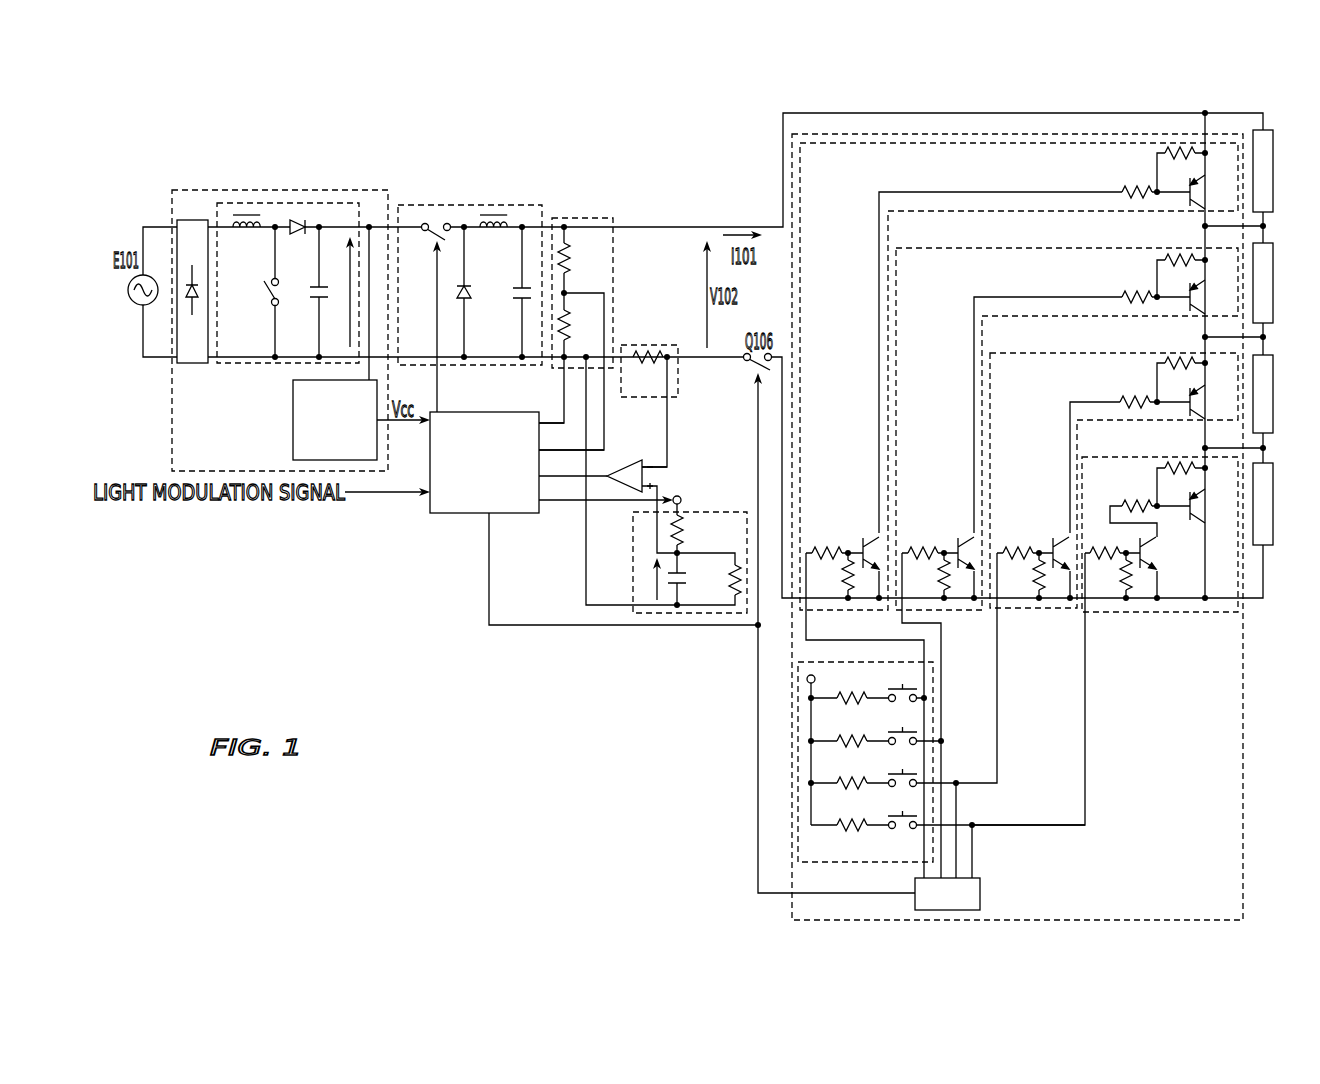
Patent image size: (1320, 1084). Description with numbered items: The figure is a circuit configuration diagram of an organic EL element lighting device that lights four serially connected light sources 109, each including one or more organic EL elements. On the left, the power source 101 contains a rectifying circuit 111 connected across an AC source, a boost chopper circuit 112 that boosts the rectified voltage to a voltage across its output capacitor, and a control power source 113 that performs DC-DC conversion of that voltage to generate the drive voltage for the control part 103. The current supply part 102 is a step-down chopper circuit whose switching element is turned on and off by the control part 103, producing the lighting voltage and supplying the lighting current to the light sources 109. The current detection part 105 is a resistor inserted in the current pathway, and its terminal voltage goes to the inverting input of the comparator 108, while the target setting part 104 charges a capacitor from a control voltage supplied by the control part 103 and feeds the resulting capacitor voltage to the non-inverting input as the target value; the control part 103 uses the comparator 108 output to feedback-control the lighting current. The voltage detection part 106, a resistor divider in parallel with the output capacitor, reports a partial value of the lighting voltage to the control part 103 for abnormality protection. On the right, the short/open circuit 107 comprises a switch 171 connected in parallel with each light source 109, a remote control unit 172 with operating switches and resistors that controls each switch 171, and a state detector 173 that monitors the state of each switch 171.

The power source 101 is at (236, 190).
The current supply part 102 is at (480, 204).
The control part 103 is at (487, 412).
The target setting part 104 is at (717, 512).
The current detection part 105 is at (646, 345).
The voltage detection part 106 is at (585, 217).
The short/open circuit 107 is at (878, 133).
The comparator 108 is at (640, 460).
The light source 109 is at (1285, 504).
The rectifying circuit 111 is at (193, 366).
The boost chopper circuit 112 is at (262, 366).
The control power source 113 is at (293, 431).
The switch 171 is at (1042, 143).
The remote control unit 172 is at (830, 862).
The state detector 173 is at (980, 893).